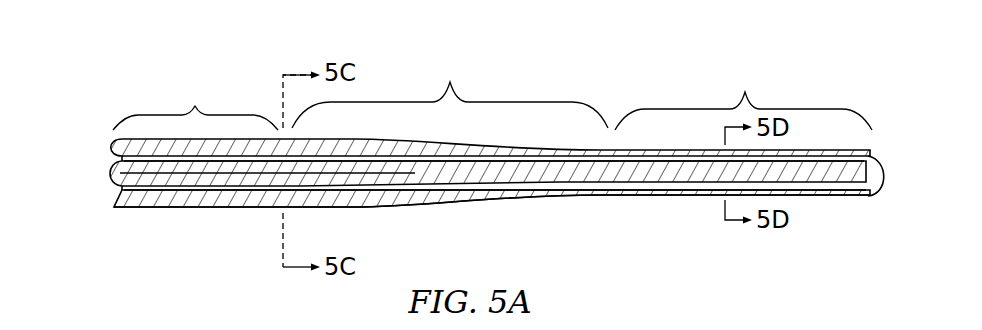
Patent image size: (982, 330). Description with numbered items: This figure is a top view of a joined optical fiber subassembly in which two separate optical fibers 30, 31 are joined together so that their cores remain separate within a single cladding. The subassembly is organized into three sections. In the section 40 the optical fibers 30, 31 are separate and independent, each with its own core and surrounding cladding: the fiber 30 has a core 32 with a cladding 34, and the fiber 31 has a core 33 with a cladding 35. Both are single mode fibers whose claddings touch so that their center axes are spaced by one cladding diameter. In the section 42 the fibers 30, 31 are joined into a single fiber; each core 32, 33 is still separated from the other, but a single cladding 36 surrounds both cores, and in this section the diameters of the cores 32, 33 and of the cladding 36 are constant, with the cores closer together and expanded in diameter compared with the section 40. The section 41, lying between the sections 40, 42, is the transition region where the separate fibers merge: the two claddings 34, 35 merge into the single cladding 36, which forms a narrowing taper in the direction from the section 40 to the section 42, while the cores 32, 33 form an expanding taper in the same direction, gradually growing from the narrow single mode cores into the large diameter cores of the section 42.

The optical fiber 30 is at (471, 164).
The optical fiber 31 is at (214, 214).
The core 32 is at (122, 158).
The core 33 is at (147, 187).
The cladding 34 is at (118, 143).
The cladding 35 is at (178, 198).
The cladding 36 is at (423, 195).
The section 40 is at (195, 105).
The section 41 is at (450, 92).
The section 42 is at (743, 97).